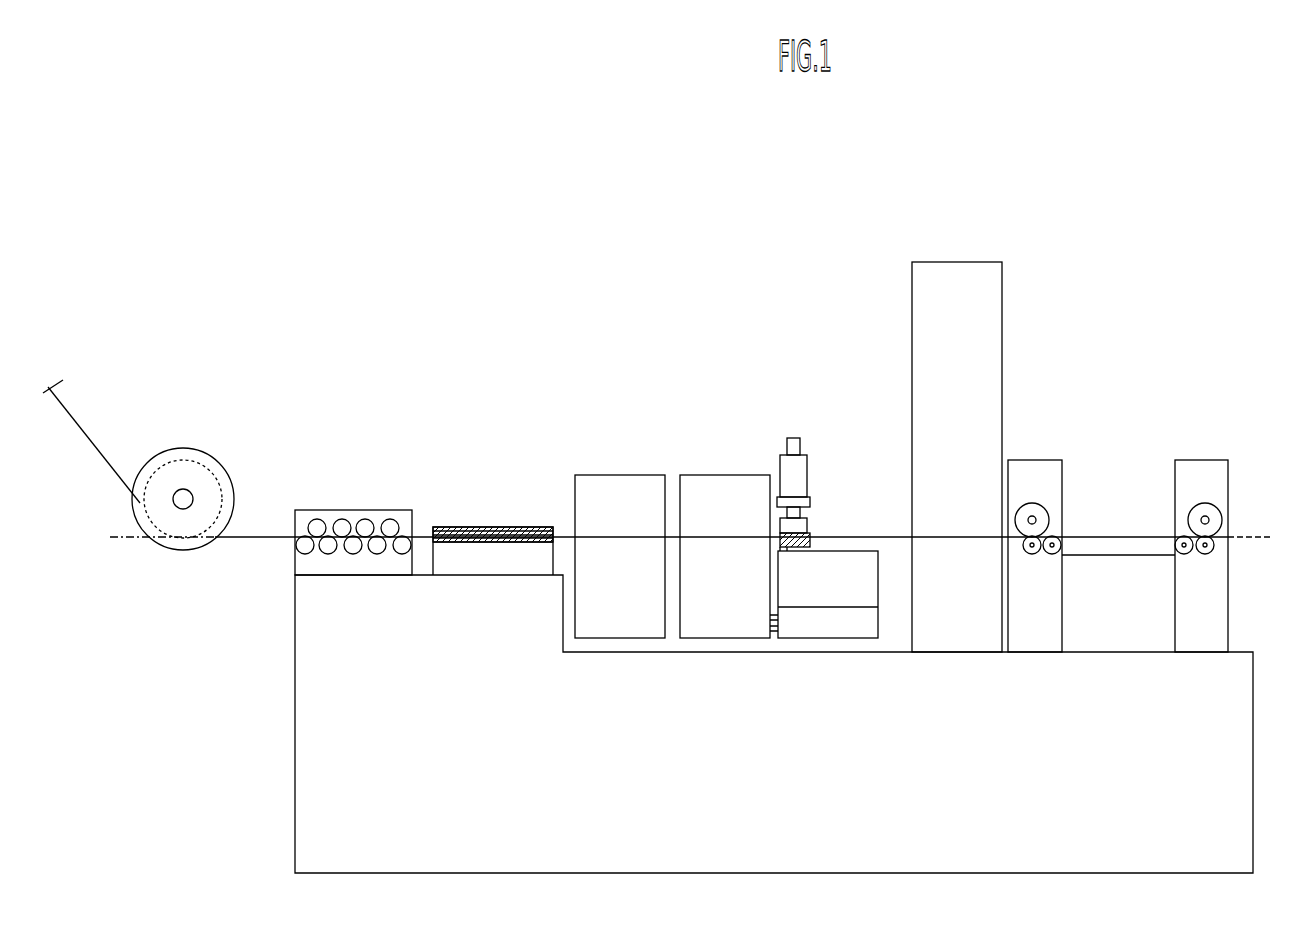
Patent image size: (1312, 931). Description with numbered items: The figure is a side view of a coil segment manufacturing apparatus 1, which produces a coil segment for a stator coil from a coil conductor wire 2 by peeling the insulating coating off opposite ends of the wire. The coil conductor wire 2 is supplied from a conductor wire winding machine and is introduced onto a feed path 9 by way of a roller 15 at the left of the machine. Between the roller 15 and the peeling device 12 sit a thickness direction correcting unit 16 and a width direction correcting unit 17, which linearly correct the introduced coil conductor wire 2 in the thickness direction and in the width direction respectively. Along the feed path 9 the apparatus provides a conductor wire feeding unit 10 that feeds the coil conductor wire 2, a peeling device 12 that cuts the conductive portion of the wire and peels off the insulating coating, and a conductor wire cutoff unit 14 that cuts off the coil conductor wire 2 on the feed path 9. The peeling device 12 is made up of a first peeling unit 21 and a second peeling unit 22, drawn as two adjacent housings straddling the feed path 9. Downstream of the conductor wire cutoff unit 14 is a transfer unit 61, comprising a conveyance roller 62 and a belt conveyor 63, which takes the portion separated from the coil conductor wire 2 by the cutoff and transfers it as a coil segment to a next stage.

The coil segment manufacturing apparatus 1 is at (827, 200).
The coil conductor wire 2 is at (86, 422).
The feed path 9 is at (140, 538).
The conductor wire feeding unit 10 is at (815, 456).
The peeling device 12 is at (594, 347).
The conductor wire cutoff unit 14 is at (905, 313).
The roller 15 is at (210, 454).
The thickness direction correcting unit 16 is at (352, 508).
The width direction correcting unit 17 is at (488, 523).
The first peeling unit 21 is at (602, 472).
The second peeling unit 22 is at (693, 472).
The transfer unit 61 is at (1124, 456).
The conveyance roller 62 is at (1044, 510).
The belt conveyor 63 is at (1103, 556).